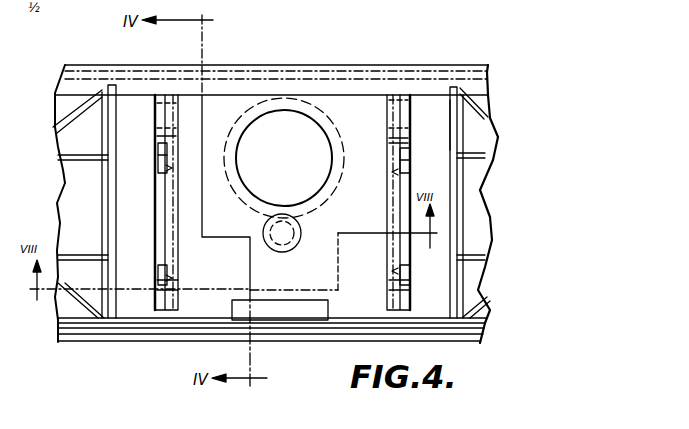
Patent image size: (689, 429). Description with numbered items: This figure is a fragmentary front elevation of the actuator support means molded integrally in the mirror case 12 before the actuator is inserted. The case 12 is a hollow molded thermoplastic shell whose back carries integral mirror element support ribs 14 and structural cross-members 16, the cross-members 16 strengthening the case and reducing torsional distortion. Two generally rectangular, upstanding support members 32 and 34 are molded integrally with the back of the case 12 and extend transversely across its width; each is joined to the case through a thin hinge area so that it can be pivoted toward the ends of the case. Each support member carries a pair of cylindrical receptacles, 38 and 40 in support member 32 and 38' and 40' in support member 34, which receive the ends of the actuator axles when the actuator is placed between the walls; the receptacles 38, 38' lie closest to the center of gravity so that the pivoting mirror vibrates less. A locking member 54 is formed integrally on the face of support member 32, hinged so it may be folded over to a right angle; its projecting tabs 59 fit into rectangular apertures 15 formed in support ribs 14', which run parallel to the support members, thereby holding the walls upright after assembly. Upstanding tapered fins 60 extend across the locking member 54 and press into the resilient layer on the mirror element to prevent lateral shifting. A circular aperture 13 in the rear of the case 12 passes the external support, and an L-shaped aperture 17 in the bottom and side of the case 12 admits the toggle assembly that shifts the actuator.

The mirror case 12 is at (285, 64).
The circular aperture 13 is at (272, 112).
The mirror element support ribs 14 is at (304, 206).
The support ribs 14' is at (496, 125).
The rectangular apertures 15 is at (112, 176).
The structural cross-members 16 is at (473, 92).
The L-shaped aperture 17 is at (272, 304).
The support member 32 is at (152, 107).
The support member 34 is at (410, 108).
The cylindrical receptacle 38 is at (201, 83).
The cylindrical receptacle 38' is at (377, 114).
The cylindrical receptacle 40 is at (185, 300).
The cylindrical receptacle 40' is at (375, 302).
The locking member 54 is at (157, 221).
The projecting tabs 59 is at (162, 168).
The tapered fins 60 is at (163, 172).